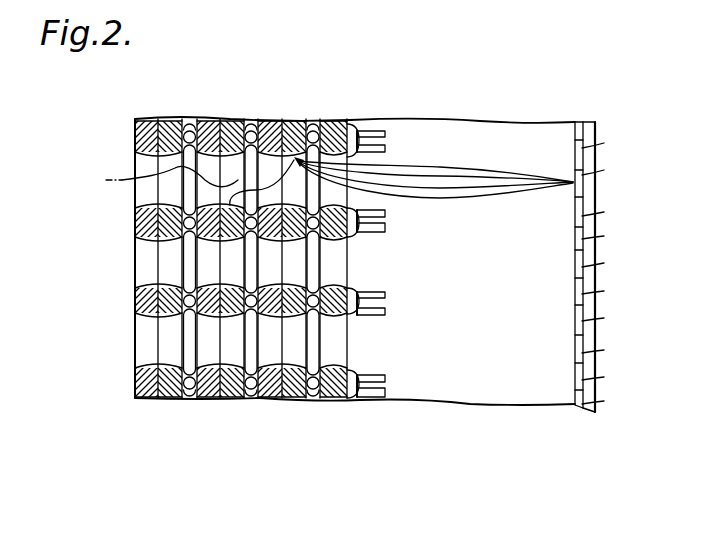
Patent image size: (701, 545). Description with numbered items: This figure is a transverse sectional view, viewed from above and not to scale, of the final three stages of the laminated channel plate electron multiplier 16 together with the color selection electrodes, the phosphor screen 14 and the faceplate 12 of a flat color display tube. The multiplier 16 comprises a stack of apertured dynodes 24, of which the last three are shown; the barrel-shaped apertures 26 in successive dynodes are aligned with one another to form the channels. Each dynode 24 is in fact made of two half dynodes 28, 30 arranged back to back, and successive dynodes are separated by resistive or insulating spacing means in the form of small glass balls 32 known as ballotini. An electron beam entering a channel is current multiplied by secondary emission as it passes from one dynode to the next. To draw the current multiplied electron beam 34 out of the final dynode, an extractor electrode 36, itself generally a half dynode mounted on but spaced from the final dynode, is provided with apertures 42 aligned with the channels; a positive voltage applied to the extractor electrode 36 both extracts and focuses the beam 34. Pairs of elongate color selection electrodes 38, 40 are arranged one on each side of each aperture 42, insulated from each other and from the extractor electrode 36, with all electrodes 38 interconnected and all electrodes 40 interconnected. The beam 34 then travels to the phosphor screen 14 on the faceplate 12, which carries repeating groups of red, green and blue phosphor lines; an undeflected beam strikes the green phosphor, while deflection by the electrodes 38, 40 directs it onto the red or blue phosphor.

The faceplate 12 is at (589, 123).
The phosphor screen 14 is at (570, 127).
The channel plate electron multiplier 16 is at (133, 211).
The apertured dynodes 24 is at (215, 256).
The barrel-shaped apertures 26 is at (157, 318).
The half dynode 28 is at (134, 378).
The half dynode 30 is at (170, 385).
The glass balls 32 is at (134, 227).
The current multiplied electron beam 34 is at (492, 165).
The extractor electrode 36 is at (339, 256).
The color selection electrode 38 is at (370, 131).
The color selection electrode 40 is at (392, 147).
The apertures 42 is at (338, 325).